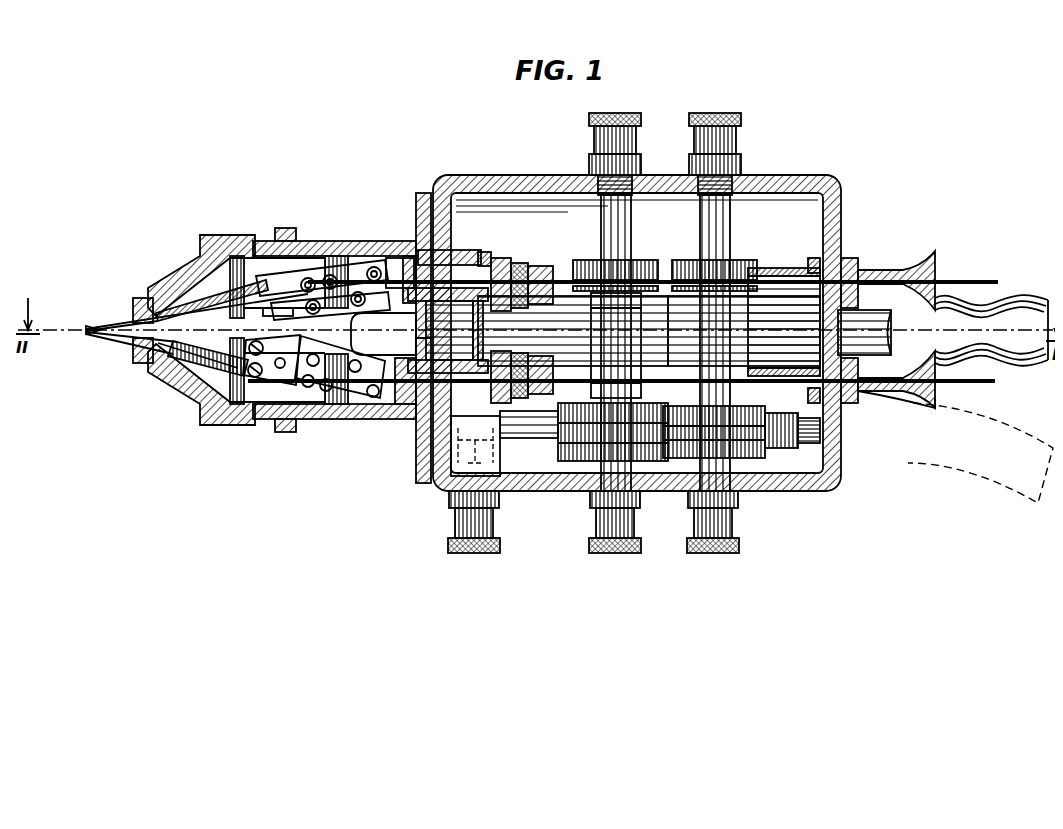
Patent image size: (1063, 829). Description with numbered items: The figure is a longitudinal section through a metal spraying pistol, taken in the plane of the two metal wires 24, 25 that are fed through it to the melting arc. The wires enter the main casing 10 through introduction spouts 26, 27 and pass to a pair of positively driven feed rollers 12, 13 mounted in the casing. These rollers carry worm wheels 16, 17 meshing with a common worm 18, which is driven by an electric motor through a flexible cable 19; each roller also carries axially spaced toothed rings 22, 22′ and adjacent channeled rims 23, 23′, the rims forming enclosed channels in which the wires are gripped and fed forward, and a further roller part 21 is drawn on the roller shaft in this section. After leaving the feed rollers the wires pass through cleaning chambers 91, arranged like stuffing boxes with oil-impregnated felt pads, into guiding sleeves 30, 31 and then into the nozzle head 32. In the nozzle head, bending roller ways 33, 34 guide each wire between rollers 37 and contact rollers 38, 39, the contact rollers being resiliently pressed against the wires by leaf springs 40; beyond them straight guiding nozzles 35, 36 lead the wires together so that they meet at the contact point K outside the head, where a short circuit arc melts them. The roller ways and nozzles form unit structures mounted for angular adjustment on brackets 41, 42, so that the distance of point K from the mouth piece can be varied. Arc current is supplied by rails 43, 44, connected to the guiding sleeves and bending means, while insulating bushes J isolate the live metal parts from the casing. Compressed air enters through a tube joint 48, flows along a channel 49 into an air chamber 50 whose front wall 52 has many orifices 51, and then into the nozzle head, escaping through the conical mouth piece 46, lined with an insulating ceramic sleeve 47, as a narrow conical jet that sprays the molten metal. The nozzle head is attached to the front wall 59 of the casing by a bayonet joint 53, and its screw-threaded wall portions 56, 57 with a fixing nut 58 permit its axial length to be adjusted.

The main casing 10 is at (516, 178).
The feed roller 12 is at (636, 318).
The feed roller 13 is at (722, 318).
The worm wheel 16 is at (575, 455).
The worm wheel 17 is at (772, 448).
The worm 18 is at (640, 455).
The flexible cable 19 is at (968, 455).
The shaft sleeve 21 is at (605, 360).
The toothed ring 22 is at (570, 252).
The toothed ring 22′ is at (695, 262).
The channeled rim 23 is at (613, 343).
The channeled rim 23′ is at (696, 330).
The metal wire 24 is at (962, 265).
The metal wire 25 is at (975, 376).
The introduction spout 26 is at (905, 258).
The introduction spout 27 is at (925, 395).
The guiding sleeve 30 is at (400, 335).
The guiding sleeve 31 is at (396, 412).
The nozzle head 32 is at (270, 235).
The bending roller way 33 is at (352, 252).
The bending roller way 34 is at (345, 385).
The straight guiding nozzle 35 is at (180, 268).
The straight guiding nozzle 36 is at (170, 380).
The bending roller 37 is at (348, 302).
The contact roller 38 is at (258, 272).
The contact roller 39 is at (275, 308).
The leaf spring 40 is at (250, 372).
The bracket 41 is at (388, 250).
The bracket 42 is at (378, 396).
The current supply rail 43 is at (496, 252).
The current supply rail 44 is at (492, 415).
The conical mouth piece 46 is at (135, 290).
The insulating conical sleeve 47 is at (128, 352).
The tube joint 48 is at (1000, 292).
The air channel 49 is at (768, 300).
The air chamber 50 is at (448, 243).
The orifices 51 is at (422, 308).
The front wall 52 is at (422, 338).
The bayonet joint 53 is at (412, 196).
The screw-threaded wall portion 56 is at (300, 411).
The screw-threaded wall portion 57 is at (272, 422).
The fixing nut 58 is at (280, 222).
The front wall of casing 59 is at (412, 462).
The insulating bushes J is at (480, 250).
The cleaning chamber 91 is at (535, 300).
The wire contact point K is at (88, 320).